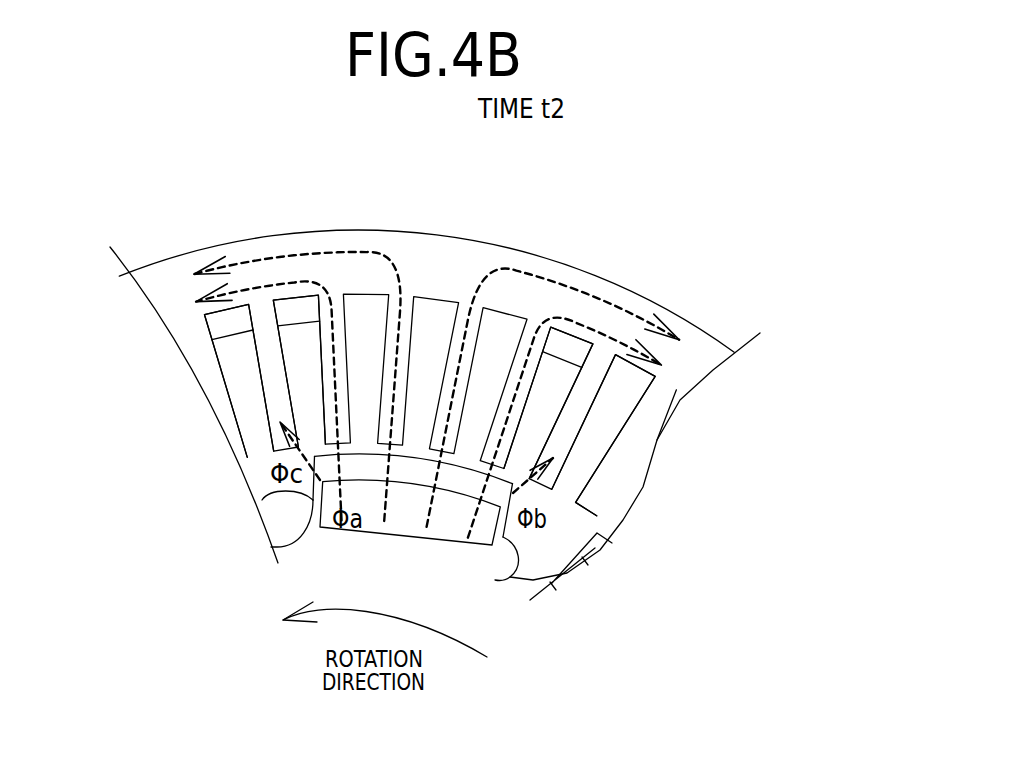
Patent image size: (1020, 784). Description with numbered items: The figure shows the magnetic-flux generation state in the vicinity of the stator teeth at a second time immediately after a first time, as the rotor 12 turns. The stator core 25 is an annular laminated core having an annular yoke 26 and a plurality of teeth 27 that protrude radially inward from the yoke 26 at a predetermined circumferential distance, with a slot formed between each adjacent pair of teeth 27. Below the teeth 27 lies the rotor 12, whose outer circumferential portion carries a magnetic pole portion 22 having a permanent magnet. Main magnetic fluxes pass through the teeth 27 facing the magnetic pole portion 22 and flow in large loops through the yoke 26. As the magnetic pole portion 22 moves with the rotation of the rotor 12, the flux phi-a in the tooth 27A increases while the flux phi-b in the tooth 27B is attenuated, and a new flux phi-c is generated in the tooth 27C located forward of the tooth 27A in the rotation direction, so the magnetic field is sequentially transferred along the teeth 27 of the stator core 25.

The rotor 12 is at (262, 500).
The magnetic pole portion 22 is at (516, 580).
The stator core 25 is at (502, 242).
The yoke 26 is at (687, 333).
The teeth 27 is at (645, 489).
The tooth 27A is at (278, 326).
The tooth 27B is at (582, 367).
The tooth 27C is at (212, 340).